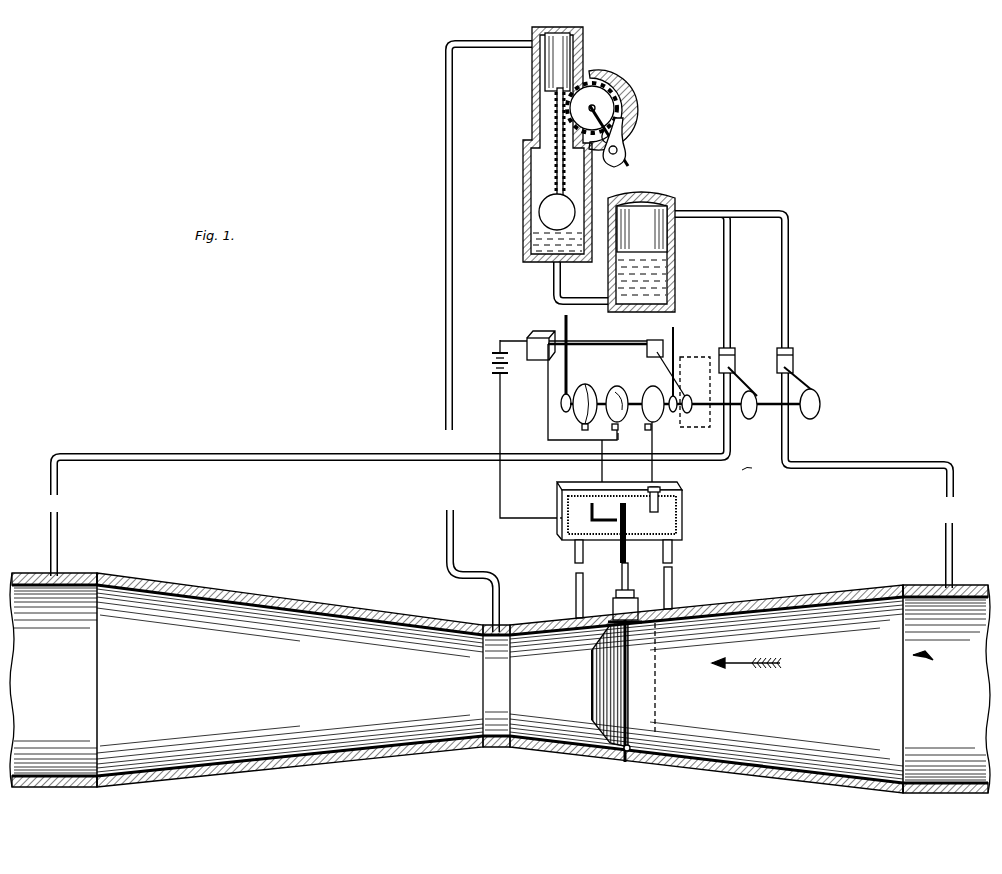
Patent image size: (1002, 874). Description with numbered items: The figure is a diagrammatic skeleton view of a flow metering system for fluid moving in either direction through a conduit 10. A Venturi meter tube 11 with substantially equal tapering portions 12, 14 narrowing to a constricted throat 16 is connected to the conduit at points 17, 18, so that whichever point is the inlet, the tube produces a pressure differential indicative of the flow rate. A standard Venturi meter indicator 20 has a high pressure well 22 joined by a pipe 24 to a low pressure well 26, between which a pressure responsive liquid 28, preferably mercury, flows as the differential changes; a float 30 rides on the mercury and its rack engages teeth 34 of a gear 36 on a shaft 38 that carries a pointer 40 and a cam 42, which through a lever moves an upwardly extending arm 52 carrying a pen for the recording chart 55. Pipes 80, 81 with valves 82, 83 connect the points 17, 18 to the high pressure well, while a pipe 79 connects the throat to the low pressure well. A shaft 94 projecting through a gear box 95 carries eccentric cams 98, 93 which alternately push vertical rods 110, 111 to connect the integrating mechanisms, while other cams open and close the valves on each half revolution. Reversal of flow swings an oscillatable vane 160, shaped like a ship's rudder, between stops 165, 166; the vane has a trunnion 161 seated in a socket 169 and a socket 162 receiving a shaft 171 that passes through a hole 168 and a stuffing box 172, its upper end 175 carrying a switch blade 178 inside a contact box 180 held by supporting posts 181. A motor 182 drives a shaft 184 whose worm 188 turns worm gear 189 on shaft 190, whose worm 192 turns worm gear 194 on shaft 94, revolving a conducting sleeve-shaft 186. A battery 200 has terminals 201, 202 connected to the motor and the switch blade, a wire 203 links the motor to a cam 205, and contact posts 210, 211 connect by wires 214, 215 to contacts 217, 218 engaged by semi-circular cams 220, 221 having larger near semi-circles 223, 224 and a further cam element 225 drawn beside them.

The conduit 10 is at (500, 683).
The Venturi meter tube 11 is at (500, 669).
The tapering portion 12 is at (215, 588).
The tapering portion 14 is at (805, 592).
The constricted throat 16 is at (482, 665).
The connection point 17 is at (100, 574).
The connection point 18 is at (902, 583).
The Venturi meter indicator 20 is at (655, 137).
The high pressure well 22 is at (672, 205).
The pipe 24 is at (568, 300).
The low pressure well 26 is at (523, 166).
The pressure responsive liquid 28 is at (538, 240).
The float 30 is at (550, 207).
The teeth 34 is at (606, 93).
The gear 36 is at (626, 104).
The shaft 38 is at (598, 105).
The pointer 40 is at (622, 152).
The cam 42 is at (630, 145).
The upwardly extending arm 52 is at (545, 135).
The recording chart 55 is at (548, 96).
The pipe 79 is at (445, 240).
The pipe 80 is at (228, 455).
The pipe 81 is at (789, 275).
The valve 82 is at (732, 360).
The valve 83 is at (792, 360).
The eccentric cam 93 is at (680, 418).
The shaft 94 is at (790, 415).
The gear box 95 is at (682, 360).
The eccentric cam 98 is at (562, 398).
The rod 110 is at (565, 328).
The rod 111 is at (677, 340).
The oscillatable vane 160 is at (600, 680).
The trunnion 161 is at (630, 752).
The socket 162 is at (592, 668).
The stop 165 is at (545, 625).
The stop 166 is at (637, 637).
The hole 168 is at (614, 610).
The socket 169 is at (622, 750).
The shaft 171 is at (622, 576).
The stuffing box 172 is at (630, 592).
The upper end of shaft 175 is at (628, 520).
The switch blade 178 is at (598, 522).
The contact box 180 is at (684, 520).
The supporting posts 181 is at (575, 595).
The motor 182 is at (535, 330).
The shaft 184 is at (585, 343).
The conducting sleeve-shaft 186 is at (625, 390).
The worm 188 is at (655, 340).
The worm gear 189 is at (676, 345).
The shaft 190 is at (696, 387).
The worm 192 is at (688, 396).
The worm gear 194 is at (750, 420).
The source of electricity 200 is at (496, 377).
The terminal 201 is at (500, 340).
The terminal 202 is at (522, 519).
The wire 203 is at (547, 425).
The cam 205 is at (583, 385).
The contact post 210 is at (590, 505).
The contact post 211 is at (660, 500).
The wire 214 is at (600, 475).
The wire 215 is at (650, 472).
The contact 217 is at (612, 430).
The contact 218 is at (625, 433).
The semi-circular cam 220 is at (612, 390).
The semi-circular cam 221 is at (652, 386).
The near semi-circle 223 is at (570, 432).
The near semi-circle 224 is at (732, 462).
The contact 225 is at (634, 430).